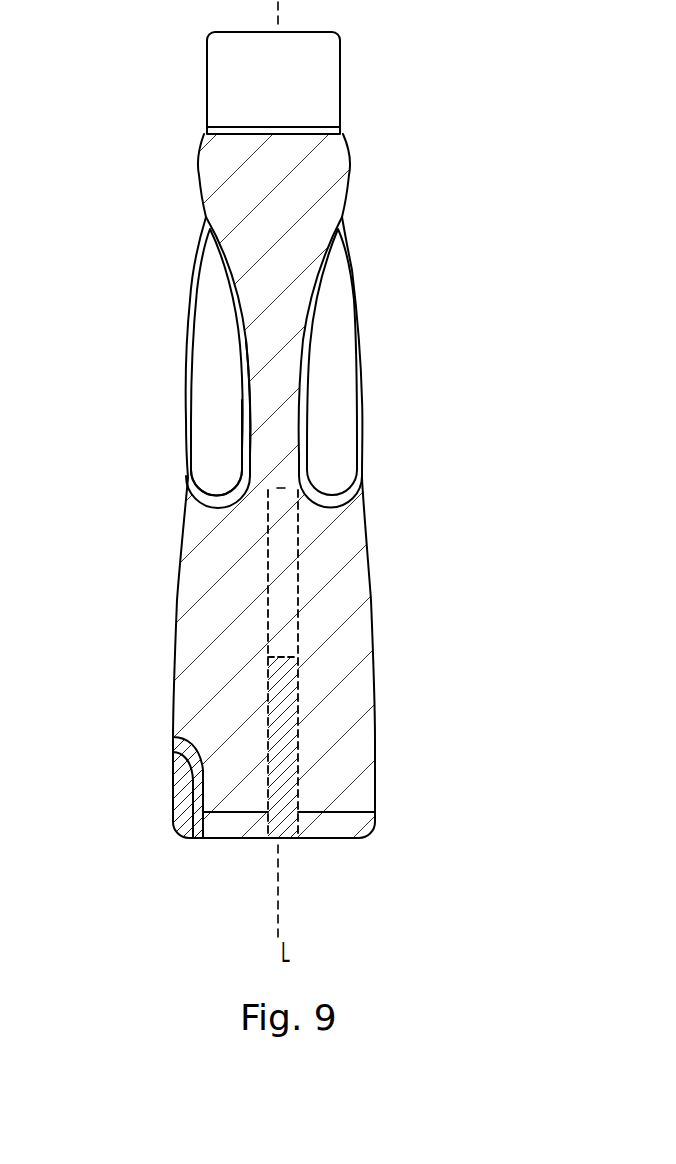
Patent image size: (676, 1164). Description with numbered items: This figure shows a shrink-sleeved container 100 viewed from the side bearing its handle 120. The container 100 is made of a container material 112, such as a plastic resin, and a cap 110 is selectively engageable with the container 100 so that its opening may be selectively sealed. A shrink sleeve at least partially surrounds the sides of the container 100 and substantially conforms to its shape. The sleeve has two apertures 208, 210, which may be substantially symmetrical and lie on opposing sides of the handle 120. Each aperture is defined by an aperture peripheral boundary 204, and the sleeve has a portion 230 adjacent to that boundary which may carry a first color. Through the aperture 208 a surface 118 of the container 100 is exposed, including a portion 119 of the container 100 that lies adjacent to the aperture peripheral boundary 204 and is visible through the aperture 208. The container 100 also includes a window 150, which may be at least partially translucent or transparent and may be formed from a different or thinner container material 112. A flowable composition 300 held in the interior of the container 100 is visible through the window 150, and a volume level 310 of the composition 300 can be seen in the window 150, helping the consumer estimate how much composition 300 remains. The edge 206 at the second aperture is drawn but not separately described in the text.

The container 100 is at (392, 172).
The cap 110 is at (323, 73).
The container material 112 is at (352, 399).
The surface 118 is at (247, 433).
The portion 119 is at (250, 410).
The handle 120 is at (257, 371).
The window 150 is at (262, 832).
The aperture peripheral boundary 204 is at (230, 268).
The second recess 206 is at (320, 263).
The aperture 208 is at (242, 308).
The aperture 210 is at (300, 332).
The portion 230 is at (265, 413).
The composition 300 is at (178, 782).
The volume level 310 is at (293, 650).